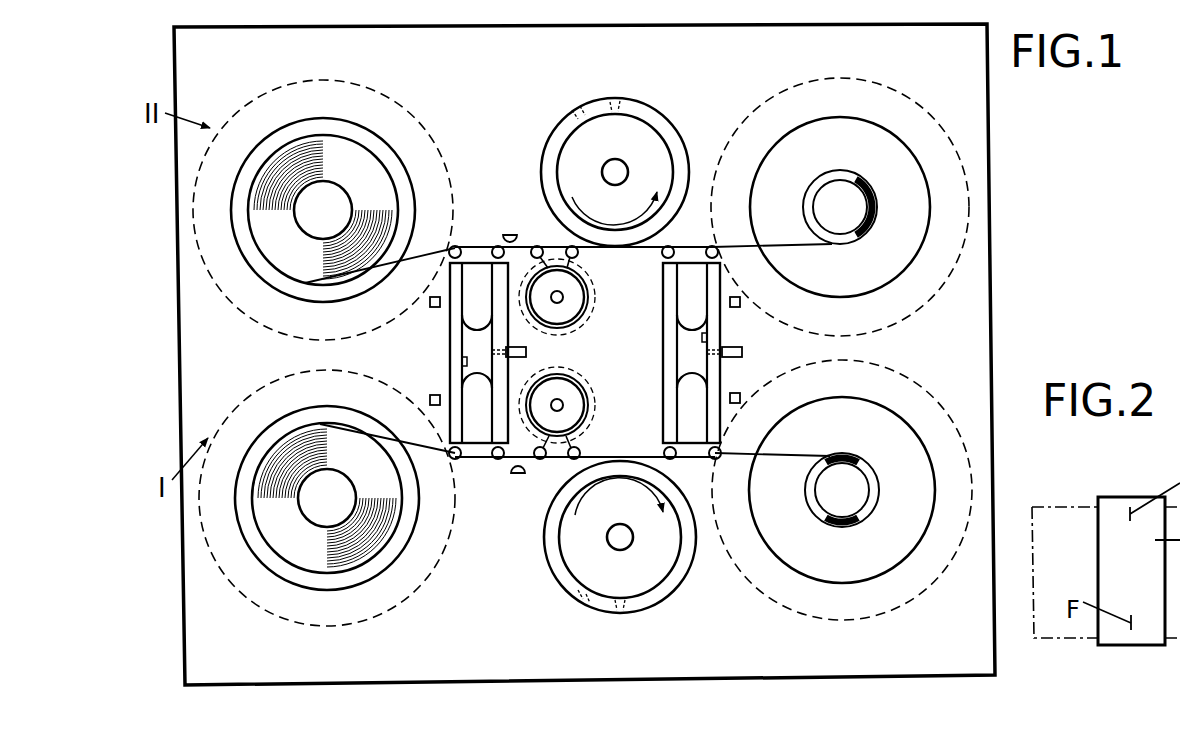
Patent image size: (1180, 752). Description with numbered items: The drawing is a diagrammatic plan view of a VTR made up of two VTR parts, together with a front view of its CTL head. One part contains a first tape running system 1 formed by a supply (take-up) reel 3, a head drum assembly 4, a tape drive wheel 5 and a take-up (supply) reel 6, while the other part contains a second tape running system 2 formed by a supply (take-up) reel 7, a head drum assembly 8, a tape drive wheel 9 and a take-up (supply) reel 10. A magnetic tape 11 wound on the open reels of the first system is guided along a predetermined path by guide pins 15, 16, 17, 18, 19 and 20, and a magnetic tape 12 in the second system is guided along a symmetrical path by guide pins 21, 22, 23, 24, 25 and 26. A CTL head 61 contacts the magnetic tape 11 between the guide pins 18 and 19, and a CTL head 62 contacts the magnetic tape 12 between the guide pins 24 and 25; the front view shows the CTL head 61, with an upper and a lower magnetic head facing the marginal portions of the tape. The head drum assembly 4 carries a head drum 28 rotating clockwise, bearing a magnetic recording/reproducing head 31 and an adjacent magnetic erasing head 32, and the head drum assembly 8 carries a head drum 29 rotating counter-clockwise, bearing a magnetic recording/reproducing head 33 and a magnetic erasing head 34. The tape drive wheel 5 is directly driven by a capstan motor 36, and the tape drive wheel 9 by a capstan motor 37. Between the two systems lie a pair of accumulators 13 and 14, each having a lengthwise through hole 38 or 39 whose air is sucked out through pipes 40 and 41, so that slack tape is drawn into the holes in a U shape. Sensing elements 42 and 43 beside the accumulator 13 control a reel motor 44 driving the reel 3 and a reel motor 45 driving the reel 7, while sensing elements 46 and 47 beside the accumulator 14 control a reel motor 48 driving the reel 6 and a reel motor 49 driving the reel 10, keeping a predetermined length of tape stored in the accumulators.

In FIG. 1, the first tape running system 1 is at (492, 520).
In FIG. 1, the second tape running system 2 is at (708, 140).
In FIG. 1, the supply (take-up) reel 3 is at (885, 565).
In FIG. 1, the head drum assembly 4 is at (665, 560).
In FIG. 1, the tape drive wheel 5 is at (575, 405).
In FIG. 1, the take-up (supply) reel 6 is at (357, 558).
In FIG. 1, the supply (take-up) reel 7 is at (895, 260).
In FIG. 1, the head drum assembly 8 is at (655, 148).
In FIG. 1, the tape drive wheel 9 is at (575, 292).
In FIG. 1, the take-up (supply) reel 10 is at (335, 147).
In FIG. 1, the magnetic tape 11 is at (740, 455).
In FIG. 2, the magnetic tape 11 is at (1045, 507).
In FIG. 1, the magnetic tape 12 is at (743, 249).
In FIG. 1, the accumulator 13 is at (710, 368).
In FIG. 1, the accumulator 14 is at (450, 342).
In FIG. 1, the guide pin 15 is at (717, 459).
In FIG. 1, the guide pin 16 is at (673, 458).
In FIG. 1, the guide pin 17 is at (580, 452).
In FIG. 1, the guide pin 18 is at (541, 459).
In FIG. 1, the guide pin 19 is at (496, 458).
In FIG. 1, the guide pin 20 is at (452, 457).
In FIG. 1, the guide pin 21 is at (714, 247).
In FIG. 1, the guide pin 22 is at (672, 249).
In FIG. 1, the guide pin 23 is at (577, 254).
In FIG. 1, the guide pin 24 is at (537, 246).
In FIG. 1, the guide pin 25 is at (496, 248).
In FIG. 1, the guide pin 26 is at (452, 246).
In FIG. 1, the head drum 28 is at (548, 545).
In FIG. 1, the head drum 29 is at (547, 160).
In FIG. 1, the magnetic recording/reproducing head 31 is at (630, 605).
In FIG. 1, the magnetic erasing head 32 is at (570, 595).
In FIG. 1, the magnetic recording/reproducing head 33 is at (620, 103).
In FIG. 1, the magnetic erasing head 34 is at (572, 112).
In FIG. 1, the capstan motor 36 is at (585, 375).
In FIG. 1, the capstan motor 37 is at (585, 322).
In FIG. 1, the through hole 38 is at (708, 340).
In FIG. 1, the through hole 39 is at (462, 362).
In FIG. 1, the pipe 40 is at (742, 352).
In FIG. 1, the pipe 41 is at (526, 352).
In FIG. 1, the sensing element 42 is at (740, 399).
In FIG. 1, the sensing element 43 is at (740, 302).
In FIG. 1, the reel motor 44 is at (905, 383).
In FIG. 1, the reel motor 45 is at (905, 85).
In FIG. 1, the sensing element 46 is at (430, 401).
In FIG. 1, the sensing element 47 is at (430, 302).
In FIG. 1, the reel motor 48 is at (248, 600).
In FIG. 1, the reel motor 49 is at (225, 297).
In FIG. 1, the CTL head 61 is at (518, 474).
In FIG. 1, the CTL head 62 is at (509, 233).